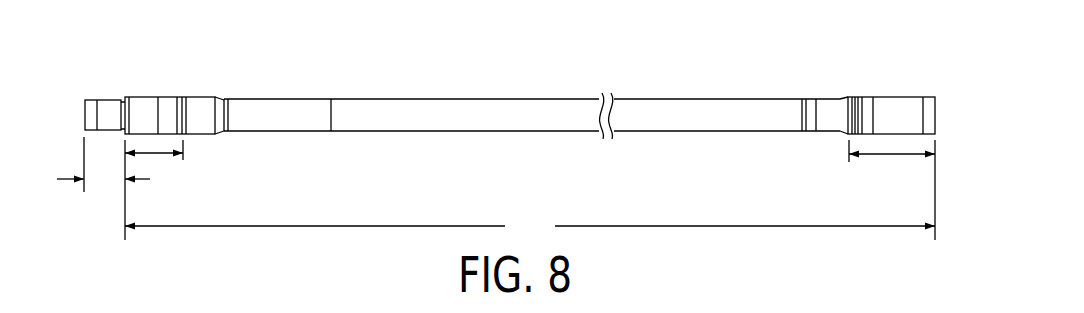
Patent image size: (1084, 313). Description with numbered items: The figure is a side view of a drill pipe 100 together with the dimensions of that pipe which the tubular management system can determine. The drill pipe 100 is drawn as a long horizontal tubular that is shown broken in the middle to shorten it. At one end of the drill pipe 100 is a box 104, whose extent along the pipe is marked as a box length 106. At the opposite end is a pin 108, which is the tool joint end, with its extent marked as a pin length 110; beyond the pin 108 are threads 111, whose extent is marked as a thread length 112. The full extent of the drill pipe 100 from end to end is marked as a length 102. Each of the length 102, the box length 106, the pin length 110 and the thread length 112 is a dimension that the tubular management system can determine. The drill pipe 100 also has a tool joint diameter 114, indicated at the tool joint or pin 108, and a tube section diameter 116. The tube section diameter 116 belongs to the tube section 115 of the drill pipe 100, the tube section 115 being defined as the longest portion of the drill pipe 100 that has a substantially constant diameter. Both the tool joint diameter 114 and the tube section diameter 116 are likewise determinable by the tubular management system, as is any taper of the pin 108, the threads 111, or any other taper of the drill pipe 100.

The drill pipe 100 is at (502, 72).
The length 102 is at (530, 190).
The box 104 is at (895, 83).
The box length 106 is at (892, 154).
The pin 108 is at (172, 75).
The pin length 110 is at (153, 153).
The threads 111 is at (103, 96).
The thread length 112 is at (148, 179).
The tool joint diameter 114 is at (158, 115).
The tube section 115 is at (532, 91).
The tube section diameter 116 is at (332, 117).